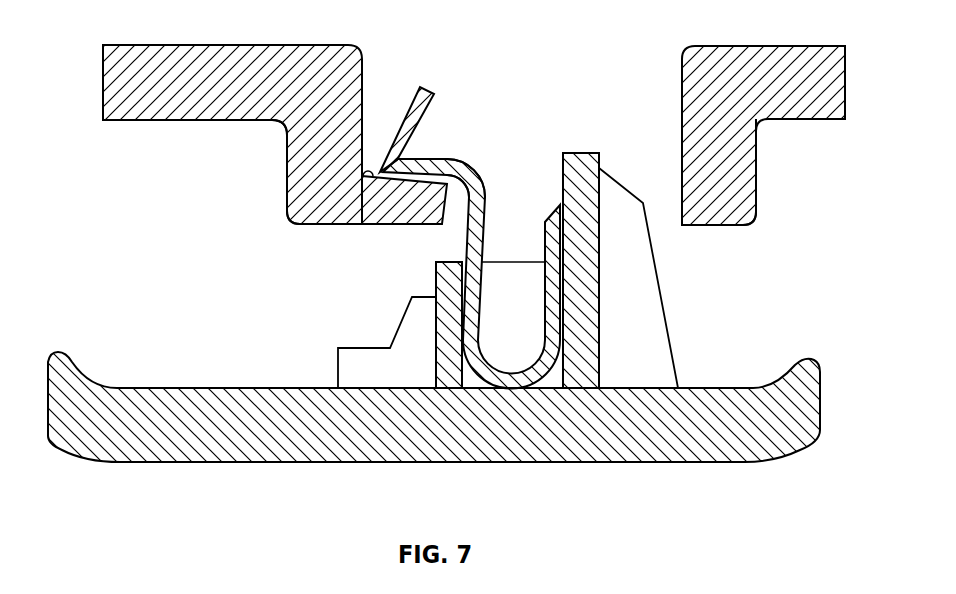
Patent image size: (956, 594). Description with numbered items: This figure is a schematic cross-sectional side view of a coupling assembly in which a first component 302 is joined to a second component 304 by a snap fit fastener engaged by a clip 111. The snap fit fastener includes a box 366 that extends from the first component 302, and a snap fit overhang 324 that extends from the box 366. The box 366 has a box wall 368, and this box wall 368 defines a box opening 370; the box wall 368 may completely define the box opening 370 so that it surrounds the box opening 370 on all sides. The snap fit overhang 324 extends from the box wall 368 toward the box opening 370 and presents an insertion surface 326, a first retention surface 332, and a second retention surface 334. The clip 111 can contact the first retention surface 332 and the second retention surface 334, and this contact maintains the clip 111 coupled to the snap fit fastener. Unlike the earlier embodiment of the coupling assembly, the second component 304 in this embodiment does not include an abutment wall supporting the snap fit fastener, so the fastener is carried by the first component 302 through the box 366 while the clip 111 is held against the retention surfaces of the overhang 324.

The first component 302 is at (232, 121).
The box 366 is at (300, 167).
The second retention surface 334 is at (367, 178).
The snap fit overhang 324 is at (427, 218).
The clip 111 is at (423, 153).
The first retention surface 332 is at (471, 262).
The insertion surface 326 is at (488, 178).
The second component 304 is at (647, 460).
The box opening 370 is at (728, 135).
The box wall 368 is at (747, 158).